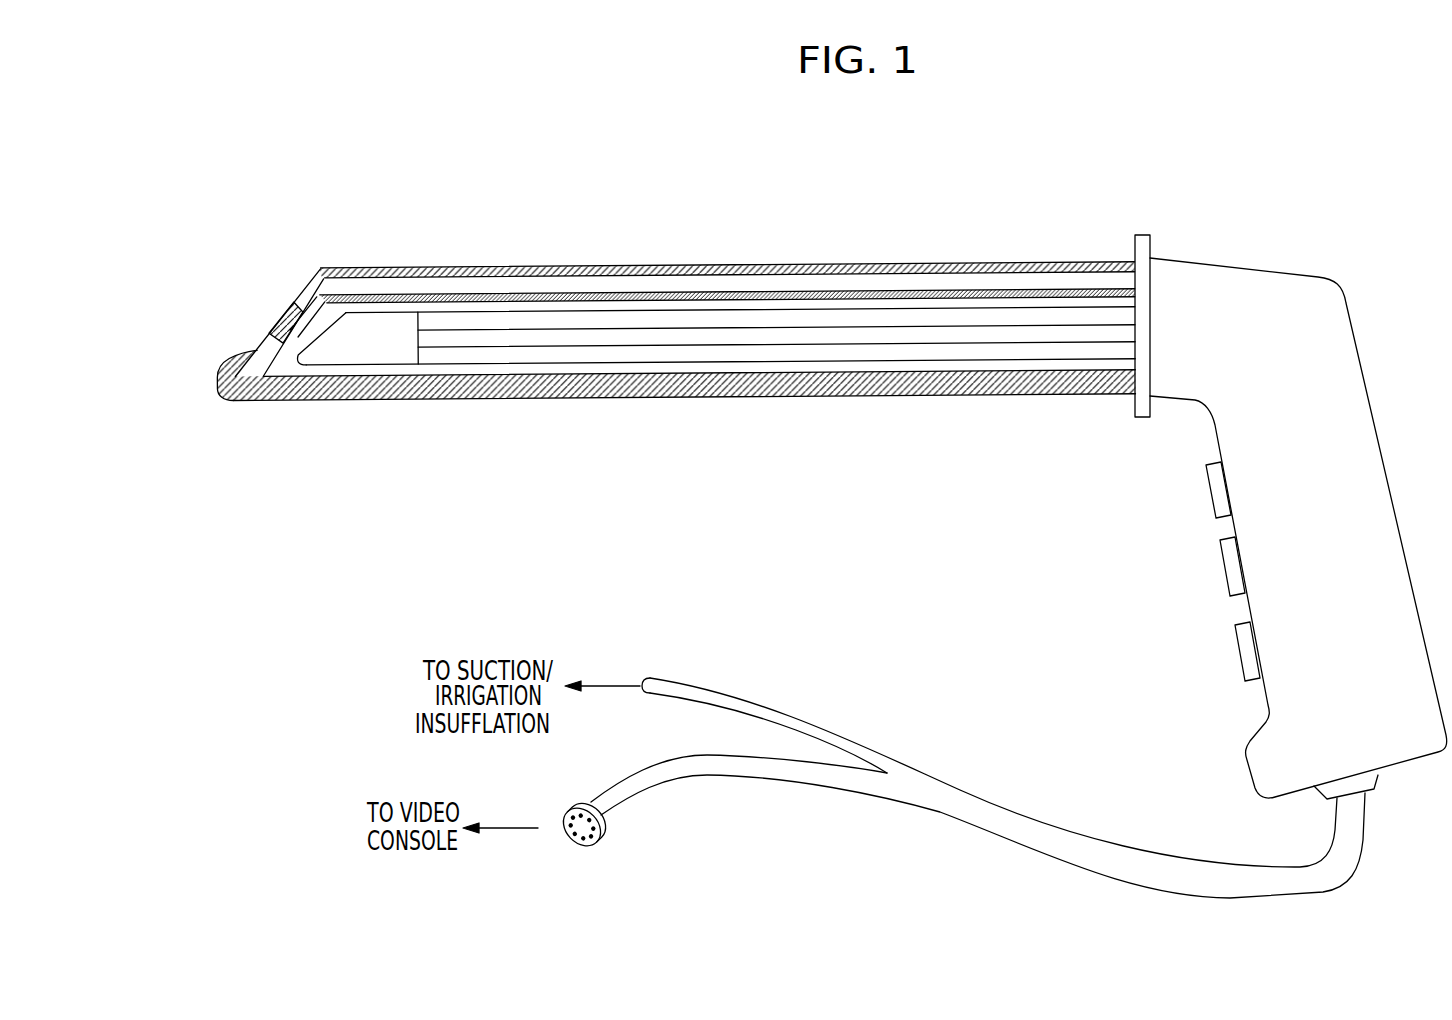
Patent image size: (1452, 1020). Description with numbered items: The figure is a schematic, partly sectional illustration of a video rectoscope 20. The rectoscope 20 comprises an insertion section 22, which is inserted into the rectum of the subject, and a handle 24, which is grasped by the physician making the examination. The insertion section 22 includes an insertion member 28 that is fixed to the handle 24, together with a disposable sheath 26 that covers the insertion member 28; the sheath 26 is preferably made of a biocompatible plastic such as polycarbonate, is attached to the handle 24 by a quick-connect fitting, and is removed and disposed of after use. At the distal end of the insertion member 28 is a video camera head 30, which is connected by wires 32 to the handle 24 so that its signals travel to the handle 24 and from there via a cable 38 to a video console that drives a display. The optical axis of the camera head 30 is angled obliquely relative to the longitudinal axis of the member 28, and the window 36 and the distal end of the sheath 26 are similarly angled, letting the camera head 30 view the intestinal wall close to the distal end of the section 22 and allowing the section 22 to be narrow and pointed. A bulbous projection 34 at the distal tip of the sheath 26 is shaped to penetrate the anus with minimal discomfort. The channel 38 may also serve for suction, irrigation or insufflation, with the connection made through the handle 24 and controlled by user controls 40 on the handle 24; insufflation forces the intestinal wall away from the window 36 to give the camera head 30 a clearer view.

The video rectoscope 20 is at (1162, 152).
The insertion section 22 is at (638, 219).
The handle 24 is at (1344, 305).
The disposable sheath 26 is at (718, 268).
The insertion member 28 is at (636, 365).
The video camera head 30 is at (345, 333).
The wires 32 is at (495, 340).
The bulbous projection 34 is at (215, 385).
The window 36 is at (283, 317).
The cable / channel 38 is at (962, 797).
The user controls 40 is at (1248, 657).